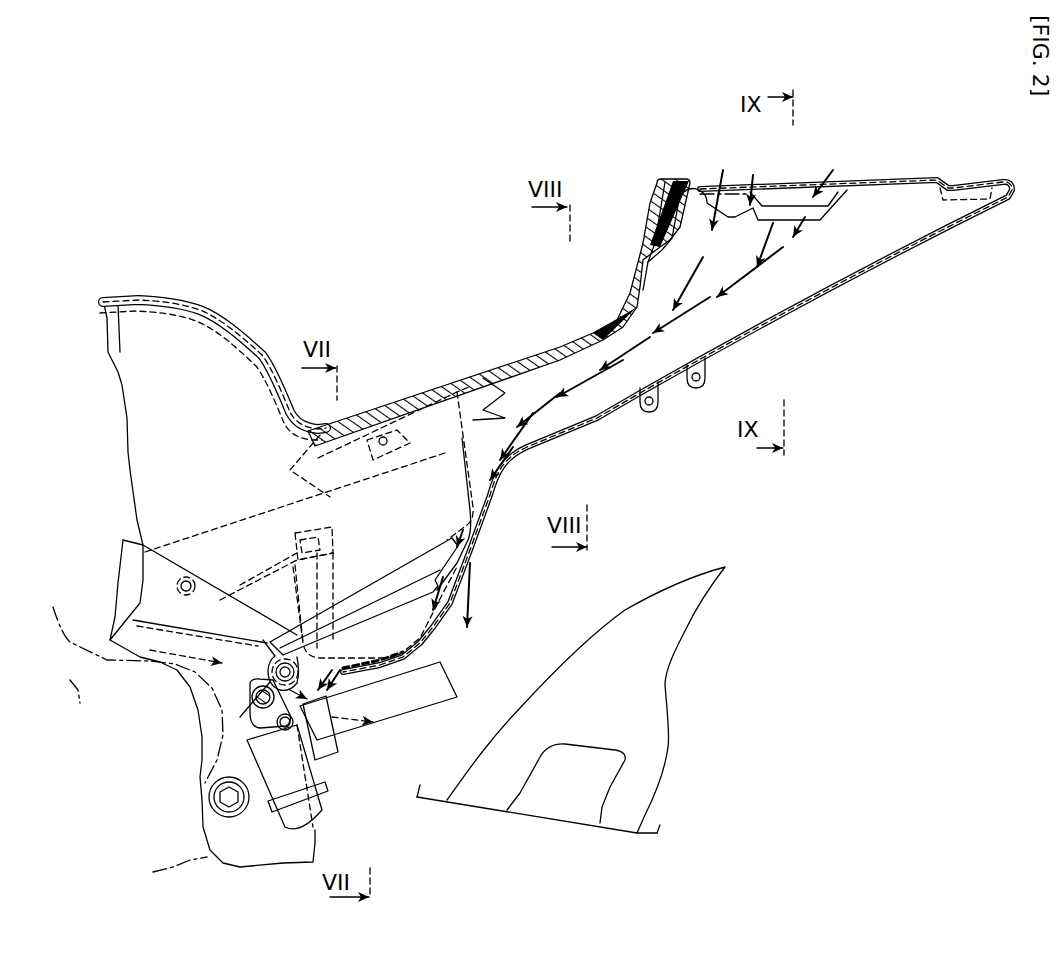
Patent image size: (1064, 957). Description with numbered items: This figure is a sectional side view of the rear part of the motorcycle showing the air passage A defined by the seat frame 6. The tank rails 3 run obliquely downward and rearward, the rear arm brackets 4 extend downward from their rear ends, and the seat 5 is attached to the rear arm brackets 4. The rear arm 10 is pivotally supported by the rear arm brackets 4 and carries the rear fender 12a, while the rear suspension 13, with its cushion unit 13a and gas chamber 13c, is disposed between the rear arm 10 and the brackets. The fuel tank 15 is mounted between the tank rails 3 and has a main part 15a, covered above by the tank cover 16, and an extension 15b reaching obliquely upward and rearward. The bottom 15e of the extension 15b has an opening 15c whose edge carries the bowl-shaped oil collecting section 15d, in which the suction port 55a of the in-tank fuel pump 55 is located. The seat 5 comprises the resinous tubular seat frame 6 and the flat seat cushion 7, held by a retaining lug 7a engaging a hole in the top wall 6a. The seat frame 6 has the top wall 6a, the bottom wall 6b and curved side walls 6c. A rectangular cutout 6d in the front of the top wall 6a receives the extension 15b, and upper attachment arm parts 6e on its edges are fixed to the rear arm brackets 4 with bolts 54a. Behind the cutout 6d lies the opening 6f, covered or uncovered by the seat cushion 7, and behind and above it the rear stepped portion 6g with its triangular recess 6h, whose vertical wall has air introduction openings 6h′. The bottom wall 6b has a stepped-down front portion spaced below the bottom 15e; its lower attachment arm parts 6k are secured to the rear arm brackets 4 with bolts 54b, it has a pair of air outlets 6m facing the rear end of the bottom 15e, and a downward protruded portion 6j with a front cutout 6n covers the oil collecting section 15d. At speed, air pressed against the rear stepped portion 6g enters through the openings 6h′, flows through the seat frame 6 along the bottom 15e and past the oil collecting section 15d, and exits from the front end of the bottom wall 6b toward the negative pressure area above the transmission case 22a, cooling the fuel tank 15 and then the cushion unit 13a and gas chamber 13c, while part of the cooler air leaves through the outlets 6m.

The tank rails 3 is at (130, 540).
The rear arm brackets 4 is at (317, 847).
The seat 5 is at (575, 287).
The seat frame 6 is at (557, 437).
The top wall 6a is at (613, 320).
The bottom wall 6b is at (593, 413).
The side walls 6c is at (662, 368).
The rectangular cutout 6d is at (480, 380).
The upper attachment arm parts 6e is at (185, 578).
The opening 6f is at (560, 357).
The rear stepped portion 6g is at (797, 190).
The recess 6h is at (717, 186).
The air introduction openings 6h′ is at (773, 200).
The protruded portion 6j is at (400, 665).
The lower attachment arm parts 6k is at (283, 657).
The air outlets 6m is at (472, 543).
The cutout 6n is at (345, 685).
The seat cushion 7 is at (493, 360).
The retaining lug 7a is at (537, 373).
The rear arm 10 is at (657, 827).
The rear fender 12a is at (581, 640).
The rear suspension 13 is at (347, 830).
The cushion unit 13a is at (328, 788).
The gas chamber 13c is at (452, 698).
The fuel tank 15 is at (263, 357).
The main part 15a is at (220, 347).
The extension 15b is at (420, 417).
The opening 15c is at (383, 577).
The oil collecting section 15d is at (433, 627).
The bottom 15e is at (432, 587).
The tank cover 16 is at (195, 303).
The transmission case 22a is at (134, 728).
The bolts 54a is at (240, 585).
The bolts 54b is at (257, 640).
The fuel pump 55 is at (338, 537).
The suction port 55a is at (330, 570).
The intake air flow A is at (730, 310).